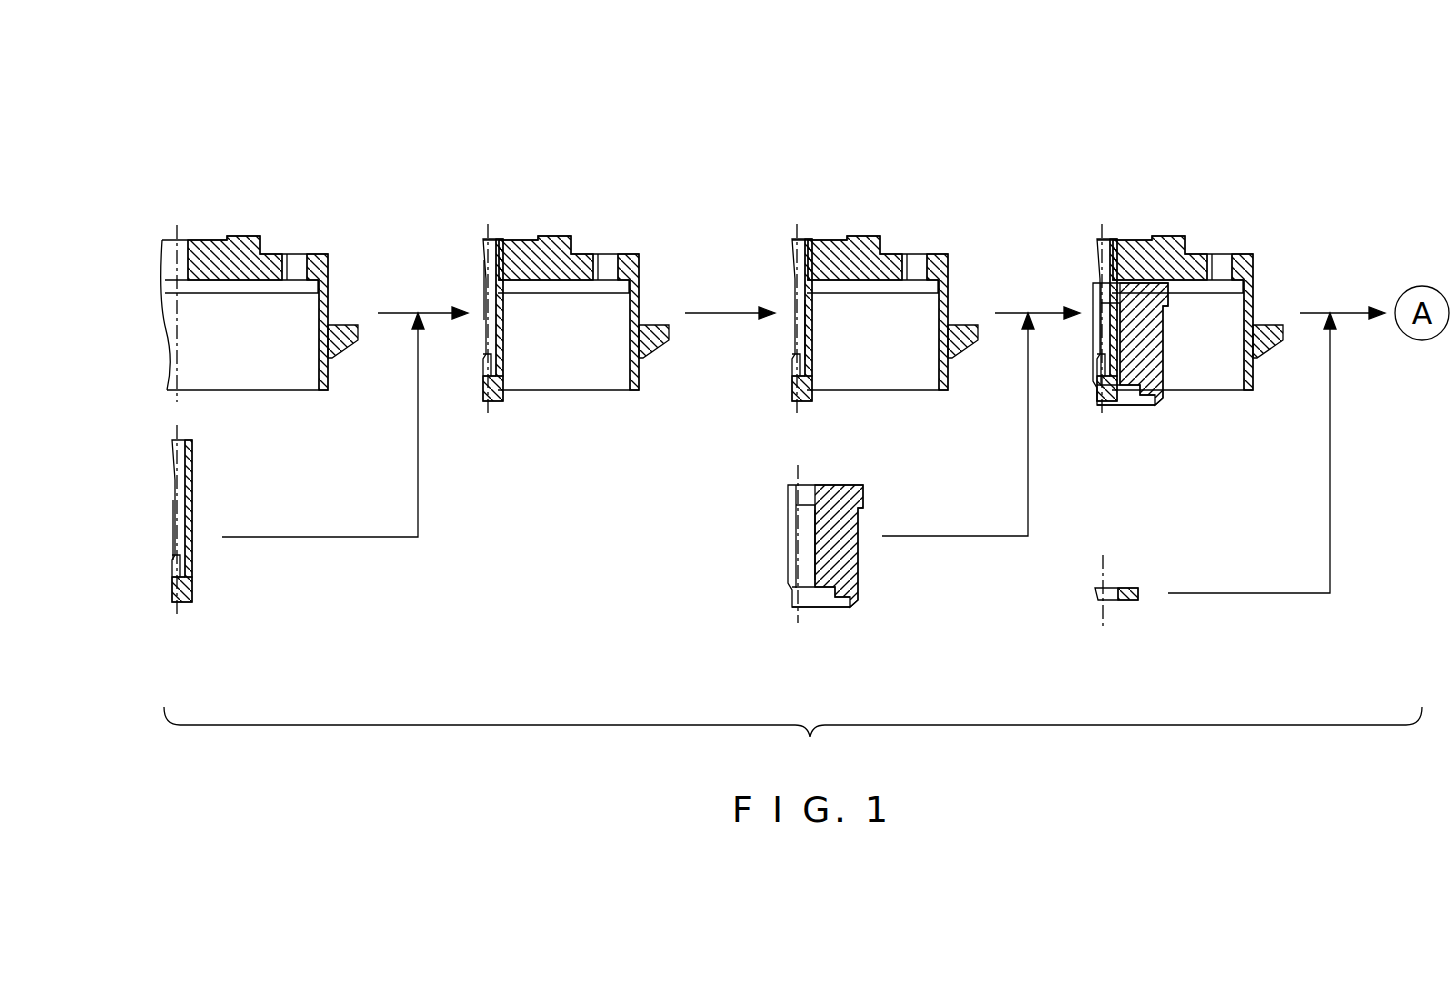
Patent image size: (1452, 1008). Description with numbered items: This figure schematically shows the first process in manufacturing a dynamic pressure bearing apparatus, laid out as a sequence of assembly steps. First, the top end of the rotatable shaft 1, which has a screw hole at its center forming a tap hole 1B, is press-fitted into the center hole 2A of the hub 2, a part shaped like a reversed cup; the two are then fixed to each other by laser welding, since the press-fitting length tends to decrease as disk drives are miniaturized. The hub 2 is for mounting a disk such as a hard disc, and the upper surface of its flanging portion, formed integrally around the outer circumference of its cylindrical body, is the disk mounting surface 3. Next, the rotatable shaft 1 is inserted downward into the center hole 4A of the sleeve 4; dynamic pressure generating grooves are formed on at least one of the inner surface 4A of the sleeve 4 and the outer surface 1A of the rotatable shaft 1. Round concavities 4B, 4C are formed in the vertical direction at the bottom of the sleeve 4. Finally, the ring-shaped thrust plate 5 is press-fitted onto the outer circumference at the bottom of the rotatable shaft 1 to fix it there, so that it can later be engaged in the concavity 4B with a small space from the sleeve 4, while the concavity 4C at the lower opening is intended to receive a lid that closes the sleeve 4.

The rotatable shaft 1 is at (192, 500).
The outer surface of rotatable shaft 1A is at (814, 347).
The tap hole 1B is at (172, 512).
The hub 2 is at (243, 245).
The center hole of hub 2A is at (174, 262).
The disk mounting surface 3 is at (347, 323).
The sleeve 4 is at (850, 557).
The center hole of sleeve 4A is at (812, 548).
The concavity 4B is at (825, 592).
The concavity 4C is at (840, 608).
The thrust plate 5 is at (1128, 601).